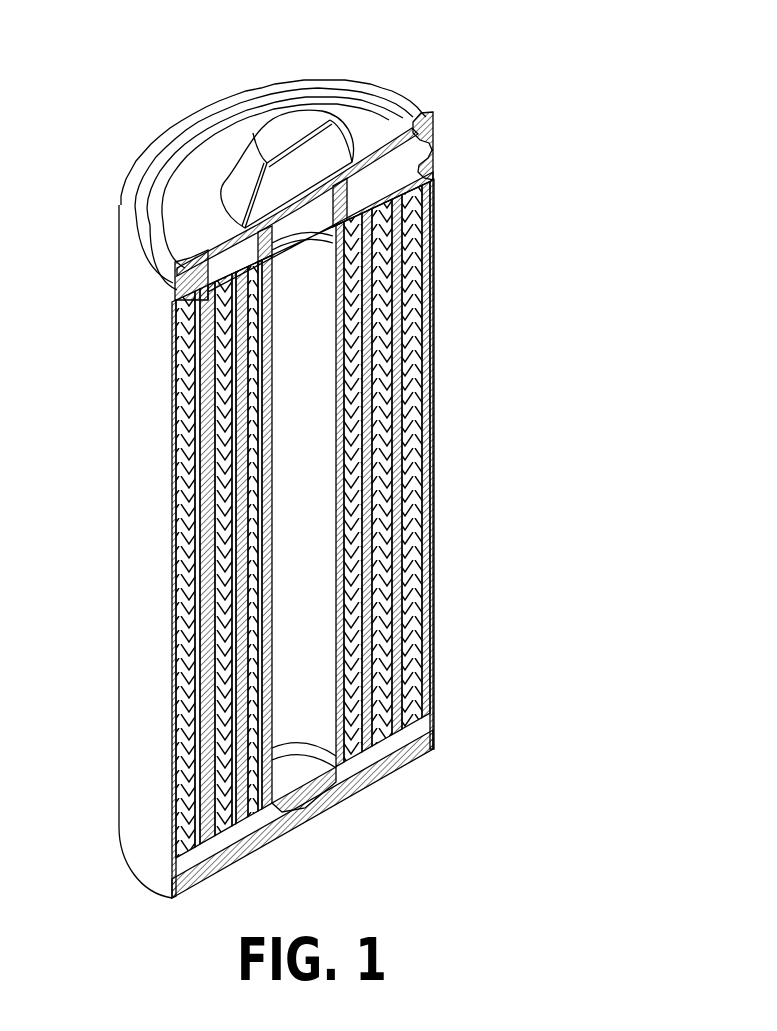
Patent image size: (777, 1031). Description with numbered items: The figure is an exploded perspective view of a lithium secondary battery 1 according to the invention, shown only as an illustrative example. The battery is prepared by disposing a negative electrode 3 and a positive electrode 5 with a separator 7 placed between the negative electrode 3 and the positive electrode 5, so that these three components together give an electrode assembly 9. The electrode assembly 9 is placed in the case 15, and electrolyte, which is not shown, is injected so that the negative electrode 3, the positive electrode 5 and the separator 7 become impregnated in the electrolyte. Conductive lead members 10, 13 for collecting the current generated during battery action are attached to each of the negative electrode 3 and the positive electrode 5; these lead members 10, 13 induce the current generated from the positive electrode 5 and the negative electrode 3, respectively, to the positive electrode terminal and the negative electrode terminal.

The lithium secondary battery 1 is at (137, 100).
The negative electrode 3 is at (428, 350).
The positive electrode 5 is at (525, 378).
The separator 7 is at (424, 297).
The electrode assembly 9 is at (372, 520).
The lead member 10 is at (436, 189).
The lead member 13 is at (414, 748).
The case 15 is at (437, 528).